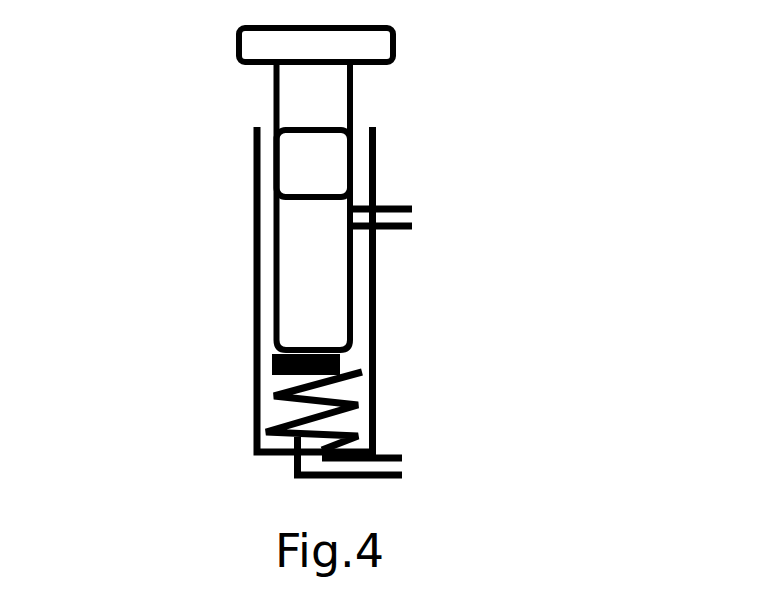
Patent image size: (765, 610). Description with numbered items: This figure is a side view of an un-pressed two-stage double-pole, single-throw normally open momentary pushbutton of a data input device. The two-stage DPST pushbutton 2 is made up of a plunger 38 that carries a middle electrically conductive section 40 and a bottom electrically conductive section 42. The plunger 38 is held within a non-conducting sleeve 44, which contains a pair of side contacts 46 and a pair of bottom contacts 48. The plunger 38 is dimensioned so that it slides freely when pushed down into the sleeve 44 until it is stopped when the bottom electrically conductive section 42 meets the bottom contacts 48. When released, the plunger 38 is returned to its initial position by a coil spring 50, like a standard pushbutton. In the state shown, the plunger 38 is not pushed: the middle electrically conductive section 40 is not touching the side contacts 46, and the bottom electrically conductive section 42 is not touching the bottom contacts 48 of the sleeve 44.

The two-stage DPST pushbutton 2 is at (233, 122).
The plunger 38 is at (333, 103).
The middle electrically conductive section 40 is at (313, 157).
The bottom electrically conductive section 42 is at (310, 356).
The non-conducting sleeve 44 is at (257, 242).
The side contacts 46 is at (393, 205).
The bottom contacts 48 is at (293, 462).
The coil spring 50 is at (293, 407).